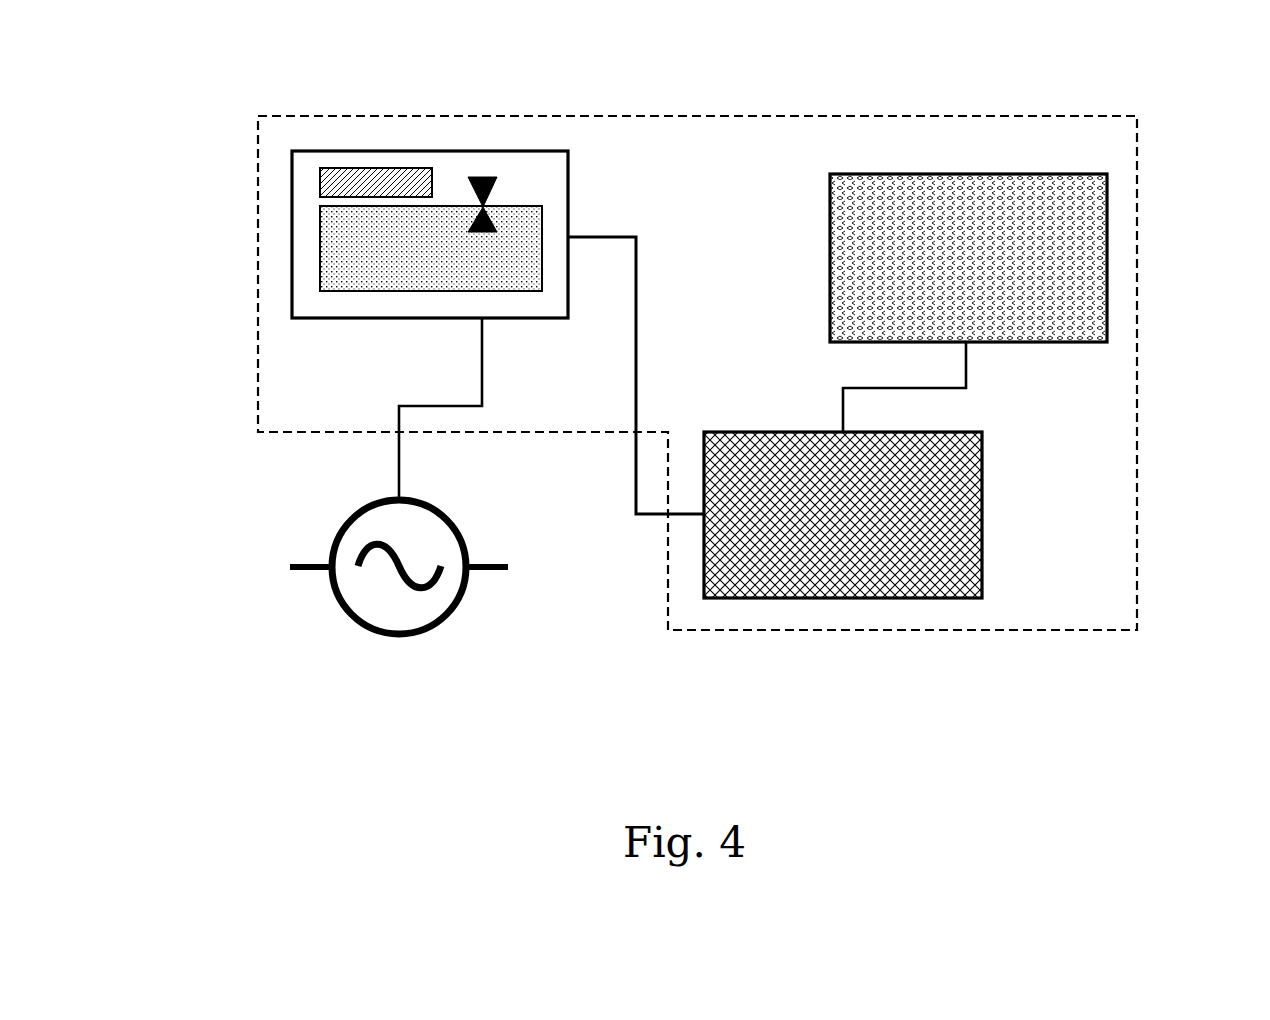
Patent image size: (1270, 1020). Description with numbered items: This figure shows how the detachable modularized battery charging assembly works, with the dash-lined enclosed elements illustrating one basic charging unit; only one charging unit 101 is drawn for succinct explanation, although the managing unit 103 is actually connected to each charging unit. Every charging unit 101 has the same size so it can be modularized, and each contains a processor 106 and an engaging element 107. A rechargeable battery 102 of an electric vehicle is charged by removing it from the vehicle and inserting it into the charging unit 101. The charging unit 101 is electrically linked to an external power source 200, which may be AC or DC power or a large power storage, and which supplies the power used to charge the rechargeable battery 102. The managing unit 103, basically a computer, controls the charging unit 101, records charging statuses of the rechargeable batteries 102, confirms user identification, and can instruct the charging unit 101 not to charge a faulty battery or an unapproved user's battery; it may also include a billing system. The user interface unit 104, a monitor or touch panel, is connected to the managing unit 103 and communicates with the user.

The charging unit 101 is at (292, 210).
The rechargeable battery 102 is at (340, 243).
The managing unit 103 is at (730, 597).
The user interface unit 104 is at (1039, 344).
The processor 106 is at (357, 193).
The engaging element 107 is at (480, 180).
The external power source 200 is at (367, 640).